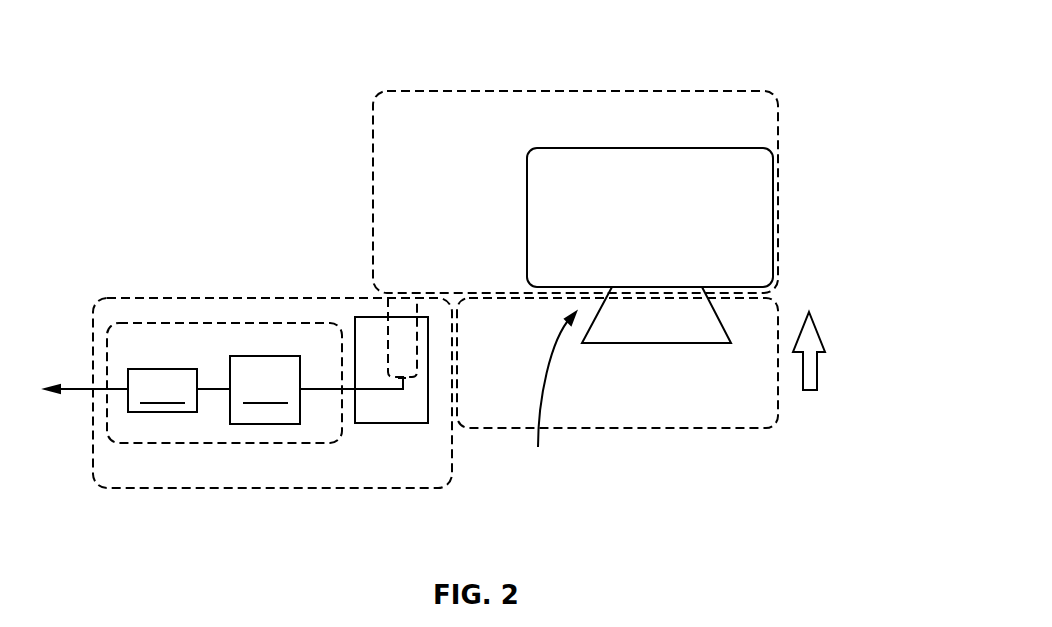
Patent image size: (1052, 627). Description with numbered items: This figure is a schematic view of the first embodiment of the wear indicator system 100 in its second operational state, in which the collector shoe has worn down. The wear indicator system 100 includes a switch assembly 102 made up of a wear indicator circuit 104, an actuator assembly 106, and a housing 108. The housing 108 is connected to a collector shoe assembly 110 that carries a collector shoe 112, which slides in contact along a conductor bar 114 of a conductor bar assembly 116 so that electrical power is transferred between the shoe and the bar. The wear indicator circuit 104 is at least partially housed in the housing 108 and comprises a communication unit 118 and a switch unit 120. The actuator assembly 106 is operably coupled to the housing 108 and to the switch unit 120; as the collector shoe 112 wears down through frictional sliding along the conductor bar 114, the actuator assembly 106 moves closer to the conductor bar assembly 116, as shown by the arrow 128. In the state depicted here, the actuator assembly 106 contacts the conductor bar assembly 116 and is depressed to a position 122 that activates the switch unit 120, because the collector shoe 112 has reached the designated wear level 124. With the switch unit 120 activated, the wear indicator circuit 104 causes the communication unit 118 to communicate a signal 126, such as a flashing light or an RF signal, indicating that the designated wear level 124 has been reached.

The wear indicator system 100 is at (838, 42).
The switch assembly 102 is at (218, 488).
The wear indicator circuit 104 is at (293, 443).
The actuator assembly 106 is at (417, 343).
The housing 108 is at (392, 423).
The collector shoe assembly 110 is at (740, 432).
The collector shoe 112 is at (657, 343).
The conductor bar 114 is at (723, 244).
The conductor bar assembly 116 is at (703, 91).
The communication unit 118 is at (179, 390).
The switch unit 120 is at (265, 390).
The position 122 is at (357, 275).
The designated wear level 124 is at (547, 397).
The signal 126 is at (77, 392).
The arrow 128 is at (810, 372).